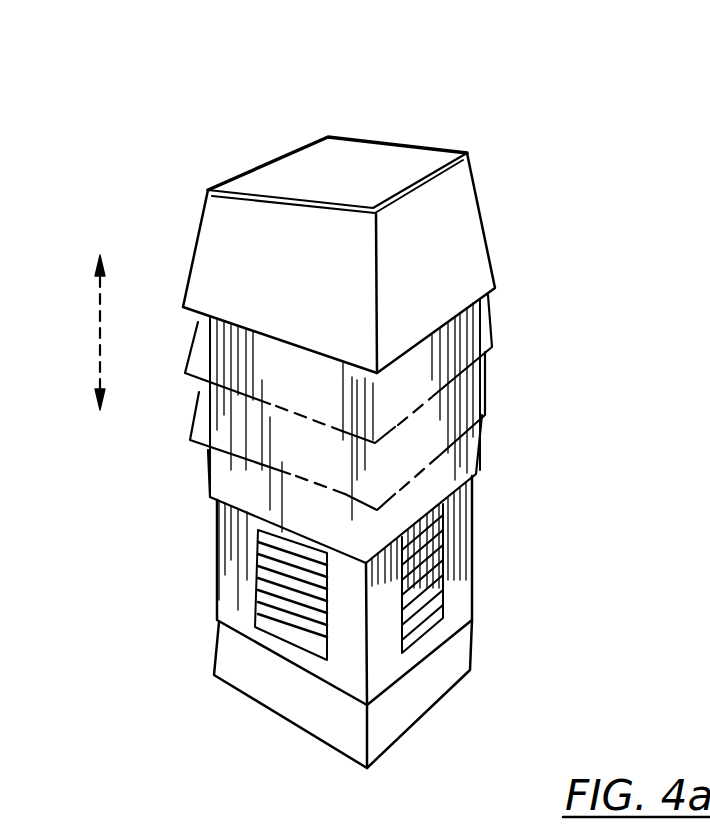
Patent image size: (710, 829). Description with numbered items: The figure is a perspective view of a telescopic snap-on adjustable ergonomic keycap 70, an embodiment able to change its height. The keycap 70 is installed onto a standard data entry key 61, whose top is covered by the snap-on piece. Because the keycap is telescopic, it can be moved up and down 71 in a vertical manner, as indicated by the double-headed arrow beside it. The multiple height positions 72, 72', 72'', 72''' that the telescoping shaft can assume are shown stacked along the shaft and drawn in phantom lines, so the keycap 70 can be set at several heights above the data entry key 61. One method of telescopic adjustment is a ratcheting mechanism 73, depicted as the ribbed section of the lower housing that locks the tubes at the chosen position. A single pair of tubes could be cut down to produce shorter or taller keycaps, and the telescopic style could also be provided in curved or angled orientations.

The adjustable ergonomic keycap 70 is at (137, 183).
The up and down movement 71 is at (81, 332).
The position 72 is at (406, 487).
The position 72' is at (405, 430).
The position 72'' is at (394, 364).
The position 72''' is at (403, 255).
The ratcheting mechanism 73 is at (425, 596).
The data entry key 61 is at (253, 673).